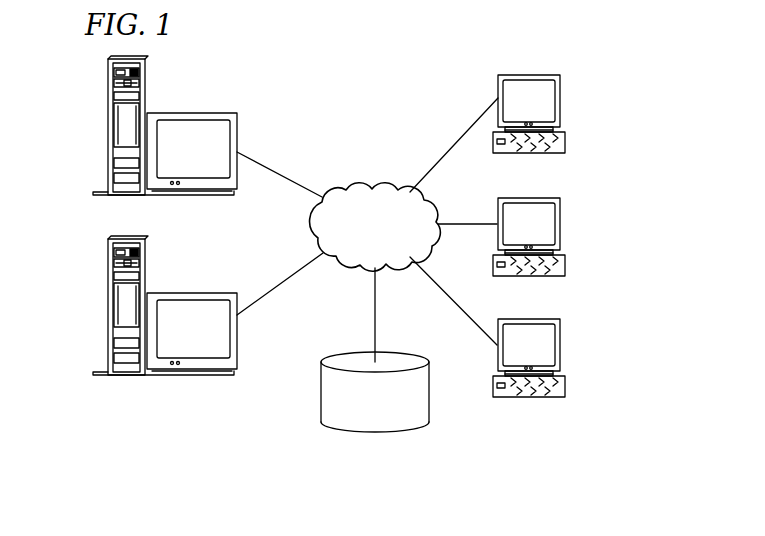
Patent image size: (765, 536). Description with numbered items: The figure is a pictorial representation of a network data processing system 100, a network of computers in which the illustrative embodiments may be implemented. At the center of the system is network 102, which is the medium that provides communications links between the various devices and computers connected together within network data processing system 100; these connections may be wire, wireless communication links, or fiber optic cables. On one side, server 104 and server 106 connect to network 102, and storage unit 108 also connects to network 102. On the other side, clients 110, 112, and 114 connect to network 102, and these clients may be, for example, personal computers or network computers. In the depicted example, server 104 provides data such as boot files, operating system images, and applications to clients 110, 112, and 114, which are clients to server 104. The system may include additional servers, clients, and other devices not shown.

The network data processing system 100 is at (421, 80).
The network 102 is at (354, 182).
The server 104 is at (108, 125).
The server 106 is at (108, 312).
The storage unit 108 is at (360, 433).
The client 110 is at (560, 100).
The client 112 is at (560, 222).
The client 114 is at (560, 344).